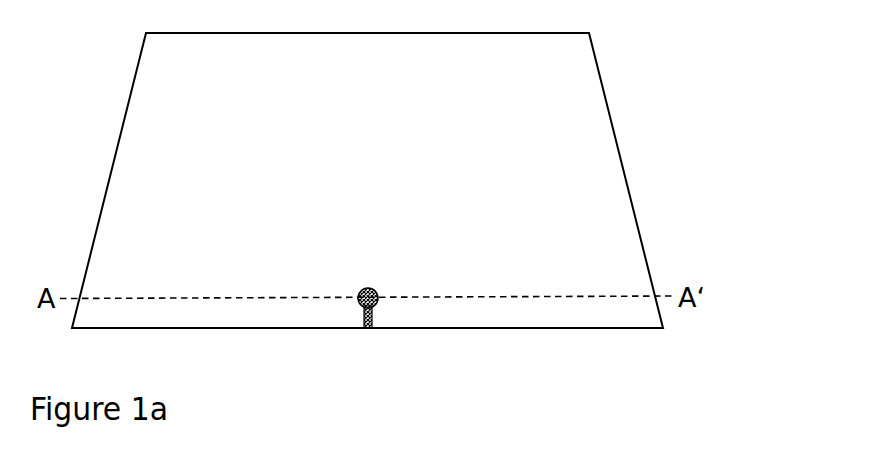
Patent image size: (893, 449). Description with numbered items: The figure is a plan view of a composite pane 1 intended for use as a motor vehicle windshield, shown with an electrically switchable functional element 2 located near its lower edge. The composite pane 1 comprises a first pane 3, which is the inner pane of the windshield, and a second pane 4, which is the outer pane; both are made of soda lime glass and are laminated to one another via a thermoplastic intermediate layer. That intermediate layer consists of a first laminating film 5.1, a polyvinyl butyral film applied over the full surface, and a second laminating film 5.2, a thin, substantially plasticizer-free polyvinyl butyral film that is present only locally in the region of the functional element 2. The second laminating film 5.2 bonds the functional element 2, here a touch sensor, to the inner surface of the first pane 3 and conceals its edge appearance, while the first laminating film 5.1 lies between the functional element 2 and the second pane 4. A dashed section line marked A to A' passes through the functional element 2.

The composite pane 1 is at (431, 179).
The electrically switchable functional element 2 is at (450, 336).
The first pane 3 is at (431, 180).
The second pane 4 is at (431, 180).
The first laminating film 5.1 is at (605, 258).
The second laminating film 5.2 is at (371, 302).